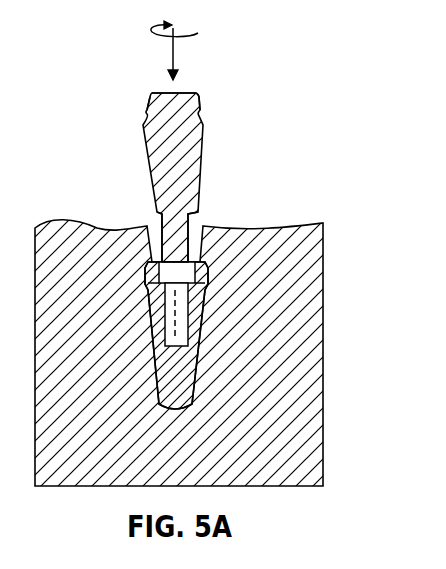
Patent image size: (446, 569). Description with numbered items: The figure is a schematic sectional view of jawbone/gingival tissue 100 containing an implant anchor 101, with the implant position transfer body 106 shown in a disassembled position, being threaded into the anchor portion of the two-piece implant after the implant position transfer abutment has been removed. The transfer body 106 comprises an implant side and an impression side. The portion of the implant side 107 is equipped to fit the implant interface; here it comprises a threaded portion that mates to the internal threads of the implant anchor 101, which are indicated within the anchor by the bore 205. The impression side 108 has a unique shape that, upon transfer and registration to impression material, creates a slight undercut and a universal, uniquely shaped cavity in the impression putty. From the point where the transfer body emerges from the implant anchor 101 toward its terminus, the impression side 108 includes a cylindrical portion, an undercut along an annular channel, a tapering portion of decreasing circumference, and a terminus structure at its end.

The gingiva tissue 100 is at (347, 229).
The implant anchor 101 is at (190, 358).
The bore of implant 205 is at (181, 296).
The implant position transfer body 106 is at (192, 152).
The implant side 107 is at (192, 192).
The impression side 108 is at (192, 105).